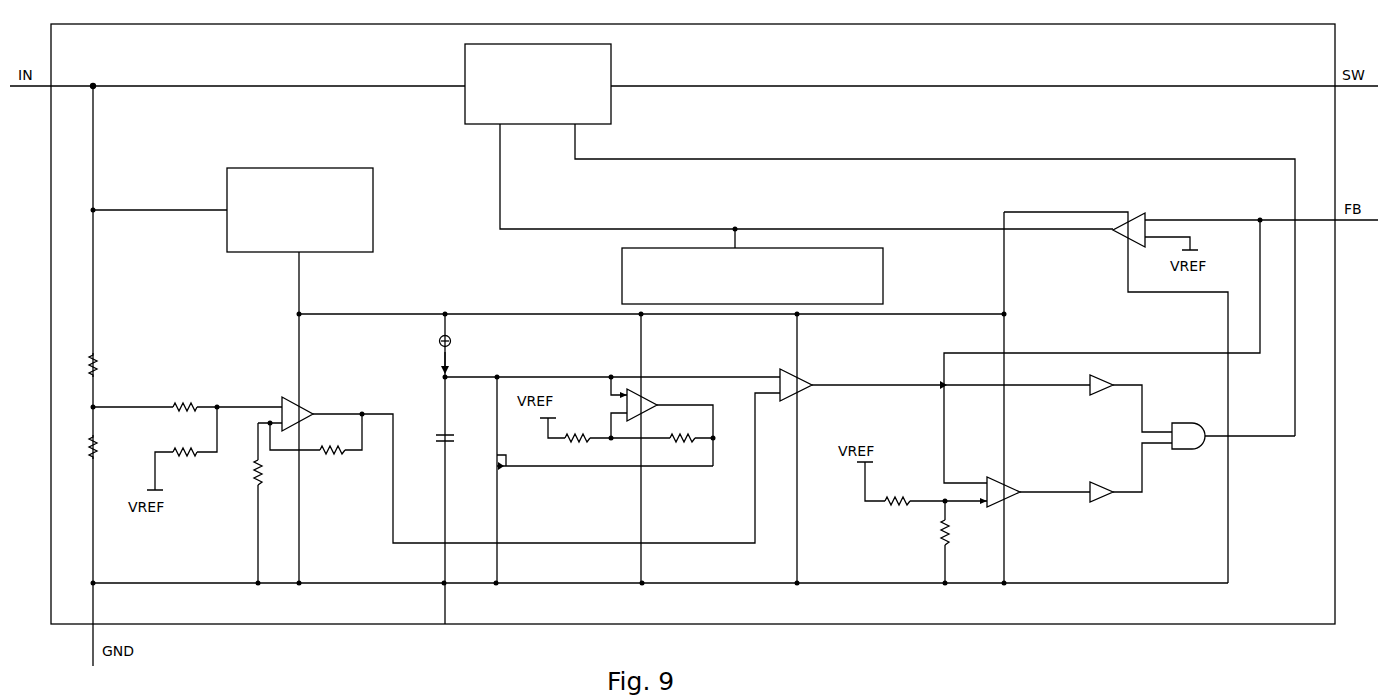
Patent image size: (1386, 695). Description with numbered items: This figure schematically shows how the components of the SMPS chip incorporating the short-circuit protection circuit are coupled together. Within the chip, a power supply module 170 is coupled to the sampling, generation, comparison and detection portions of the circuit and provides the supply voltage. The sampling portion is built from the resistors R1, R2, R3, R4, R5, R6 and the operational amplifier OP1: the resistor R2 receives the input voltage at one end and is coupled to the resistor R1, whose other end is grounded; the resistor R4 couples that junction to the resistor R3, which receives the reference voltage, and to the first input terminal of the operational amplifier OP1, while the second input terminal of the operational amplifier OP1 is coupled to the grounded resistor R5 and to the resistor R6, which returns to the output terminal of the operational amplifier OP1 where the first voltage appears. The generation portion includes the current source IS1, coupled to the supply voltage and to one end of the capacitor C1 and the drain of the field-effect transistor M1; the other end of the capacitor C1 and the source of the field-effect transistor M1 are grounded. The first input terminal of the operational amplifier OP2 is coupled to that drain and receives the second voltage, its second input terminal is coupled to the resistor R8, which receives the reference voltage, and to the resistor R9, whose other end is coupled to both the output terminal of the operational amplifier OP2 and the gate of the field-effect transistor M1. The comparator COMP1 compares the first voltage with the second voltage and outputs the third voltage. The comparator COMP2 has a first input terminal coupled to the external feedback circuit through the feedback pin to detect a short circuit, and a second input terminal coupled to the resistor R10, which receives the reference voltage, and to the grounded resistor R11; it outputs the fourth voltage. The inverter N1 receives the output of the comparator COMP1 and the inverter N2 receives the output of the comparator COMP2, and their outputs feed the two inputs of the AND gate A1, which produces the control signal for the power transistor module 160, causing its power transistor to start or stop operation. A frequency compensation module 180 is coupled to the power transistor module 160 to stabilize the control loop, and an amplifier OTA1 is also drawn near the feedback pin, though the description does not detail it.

The power transistor module 160 is at (880, 240).
The power supply module 170 is at (233, 210).
The frequency compensation module 180 is at (752, 266).
The resistor R1 is at (106, 447).
The resistor R2 is at (106, 365).
The resistor R3 is at (182, 448).
The resistor R4 is at (187, 419).
The resistor R5 is at (270, 503).
The resistor R6 is at (316, 434).
The resistor R8 is at (575, 429).
The resistor R9 is at (662, 429).
The resistor R10 is at (922, 493).
The resistor R11 is at (927, 542).
The operational amplifier OP1 is at (531, 460).
The operational amplifier OP2 is at (662, 421).
The comparator COMP1 is at (935, 380).
The comparator COMP2 is at (1035, 482).
The operational transconductance amplifier OTA1 is at (1102, 385).
The current source IS1 is at (458, 354).
The capacitor C1 is at (458, 443).
The field-effect transistor M1 is at (605, 480).
The inverter N1 is at (1131, 403).
The inverter N2 is at (1131, 483).
The AND gate A1 is at (1233, 448).